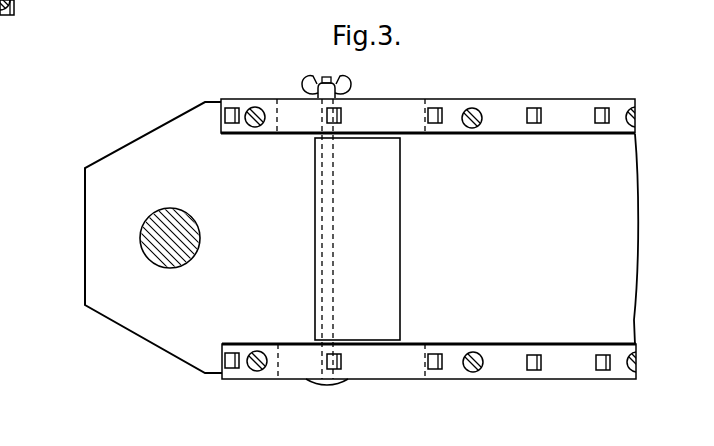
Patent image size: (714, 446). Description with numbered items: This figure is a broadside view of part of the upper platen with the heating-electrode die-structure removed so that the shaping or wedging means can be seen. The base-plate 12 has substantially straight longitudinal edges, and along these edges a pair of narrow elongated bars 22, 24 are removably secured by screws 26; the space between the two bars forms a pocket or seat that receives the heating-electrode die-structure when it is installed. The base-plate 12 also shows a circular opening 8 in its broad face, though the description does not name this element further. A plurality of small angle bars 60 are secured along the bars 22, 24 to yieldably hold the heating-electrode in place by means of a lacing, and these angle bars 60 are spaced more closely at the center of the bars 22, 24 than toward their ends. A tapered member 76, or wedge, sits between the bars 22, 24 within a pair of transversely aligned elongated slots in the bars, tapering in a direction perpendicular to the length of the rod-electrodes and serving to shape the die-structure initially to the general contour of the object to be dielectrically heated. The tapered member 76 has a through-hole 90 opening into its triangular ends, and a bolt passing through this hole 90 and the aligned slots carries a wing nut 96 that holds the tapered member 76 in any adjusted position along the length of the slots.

The hole 8 is at (170, 265).
The base-plate 12 is at (92, 253).
The bar 22 is at (506, 130).
The bar 24 is at (509, 349).
The screws 26 is at (257, 108).
The angle bars 60 is at (230, 124).
The tapered member 76 is at (421, 229).
The through-hole 90 is at (327, 386).
The wing nut 96 is at (352, 86).